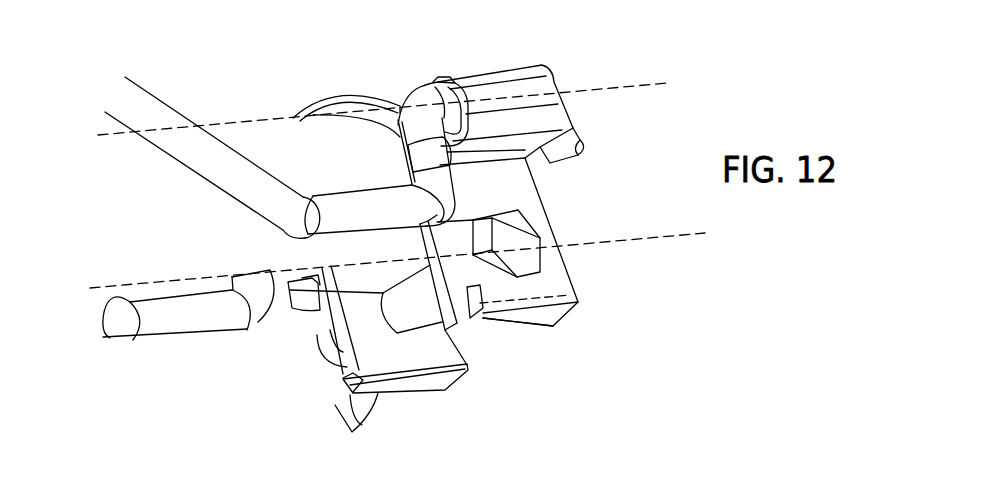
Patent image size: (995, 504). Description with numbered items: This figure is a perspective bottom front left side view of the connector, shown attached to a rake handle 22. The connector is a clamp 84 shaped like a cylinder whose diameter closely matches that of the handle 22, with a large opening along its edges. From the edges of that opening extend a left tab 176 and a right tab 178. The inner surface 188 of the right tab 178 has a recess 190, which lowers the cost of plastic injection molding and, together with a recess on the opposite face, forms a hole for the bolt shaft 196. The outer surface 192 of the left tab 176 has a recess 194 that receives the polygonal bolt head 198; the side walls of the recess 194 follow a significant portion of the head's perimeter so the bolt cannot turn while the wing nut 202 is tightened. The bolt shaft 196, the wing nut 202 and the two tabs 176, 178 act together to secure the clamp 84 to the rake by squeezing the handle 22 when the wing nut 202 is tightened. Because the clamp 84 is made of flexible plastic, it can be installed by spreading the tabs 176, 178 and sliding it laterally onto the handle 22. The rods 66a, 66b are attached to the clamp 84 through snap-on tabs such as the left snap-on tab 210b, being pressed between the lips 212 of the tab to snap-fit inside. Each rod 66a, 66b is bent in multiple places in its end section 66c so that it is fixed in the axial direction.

The rake handle 22 is at (628, 87).
The right rod 66a is at (190, 337).
The left rod 66b is at (183, 117).
The end section 66c is at (433, 110).
The clamp 84 is at (353, 92).
The left tab 176 is at (537, 210).
The right tab 178 is at (432, 390).
The inner surface 188 is at (400, 345).
The recess 190 is at (433, 323).
The outer surface 192 is at (550, 288).
The recess 194 is at (478, 267).
The bolt shaft 196 is at (410, 302).
The bolt head 198 is at (542, 248).
The wing nut 202 is at (357, 423).
The left snap-on tab 210b is at (525, 63).
The lips 212 is at (433, 80).